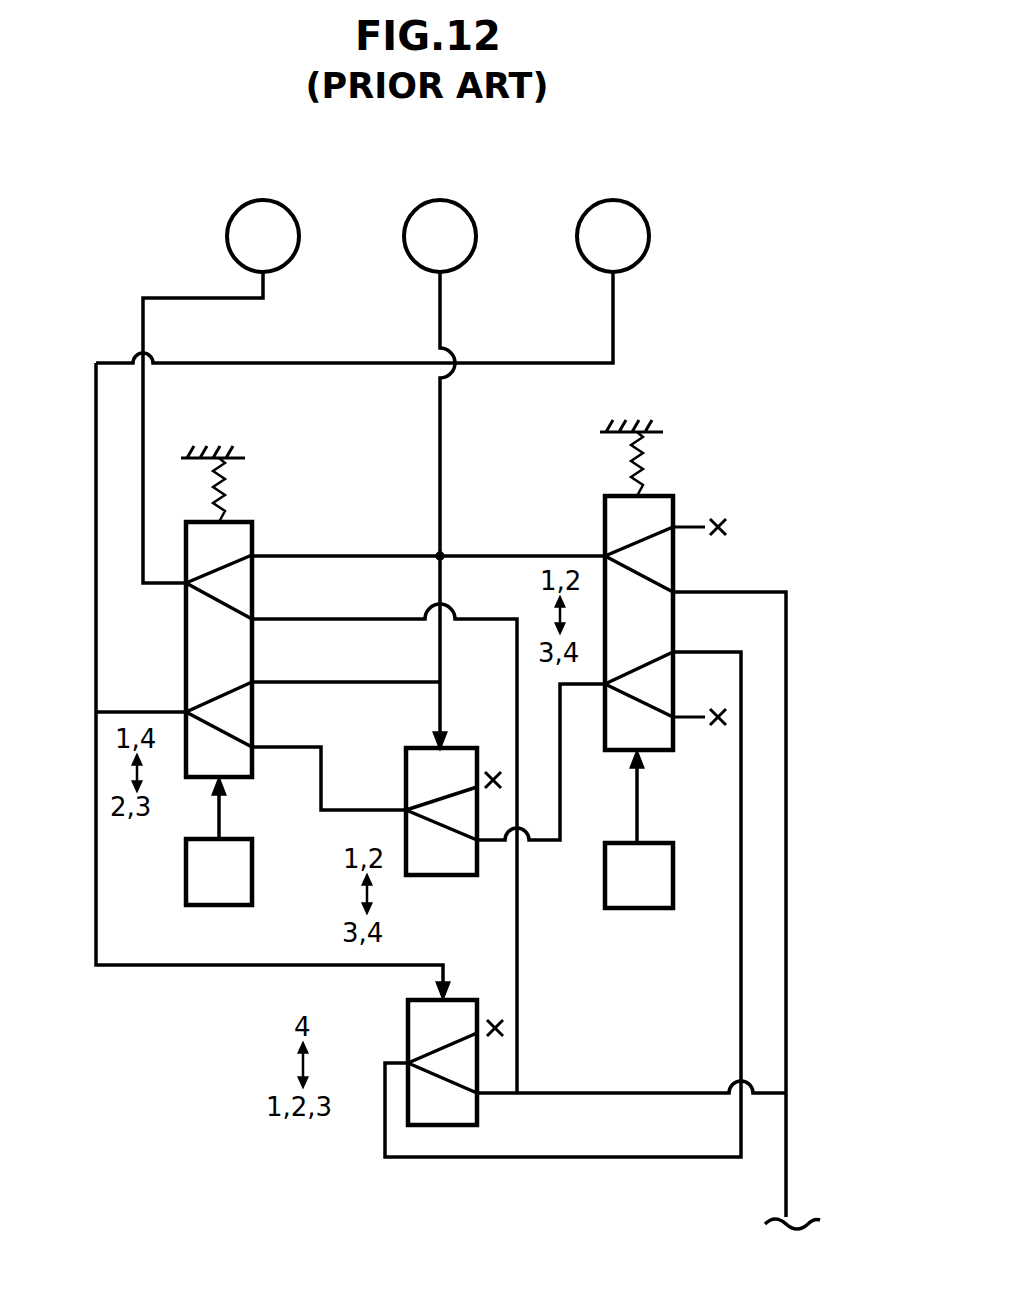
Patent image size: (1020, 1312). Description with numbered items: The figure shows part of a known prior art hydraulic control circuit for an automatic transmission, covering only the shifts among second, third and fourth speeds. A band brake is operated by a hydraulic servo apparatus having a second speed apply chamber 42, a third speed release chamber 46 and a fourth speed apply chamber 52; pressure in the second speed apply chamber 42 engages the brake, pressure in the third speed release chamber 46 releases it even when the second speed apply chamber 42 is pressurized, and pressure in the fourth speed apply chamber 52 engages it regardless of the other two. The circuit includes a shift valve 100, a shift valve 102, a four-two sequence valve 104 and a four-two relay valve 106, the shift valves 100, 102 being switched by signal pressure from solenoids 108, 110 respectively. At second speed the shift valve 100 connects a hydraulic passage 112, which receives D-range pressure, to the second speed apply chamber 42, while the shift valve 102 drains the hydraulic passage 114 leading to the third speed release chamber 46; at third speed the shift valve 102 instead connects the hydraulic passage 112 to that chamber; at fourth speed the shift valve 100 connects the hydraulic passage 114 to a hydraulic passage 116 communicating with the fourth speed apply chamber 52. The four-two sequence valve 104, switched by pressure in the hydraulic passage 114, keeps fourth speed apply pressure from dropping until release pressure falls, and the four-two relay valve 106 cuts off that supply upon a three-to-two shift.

The second speed apply chamber 42 is at (261, 200).
The third speed release chamber 46 is at (438, 200).
The fourth speed apply chamber 52 is at (611, 200).
The shift valve 100 is at (256, 518).
The shift valve 102 is at (672, 490).
The 4-2 sequence valve 104 is at (464, 740).
The 4-2 relay valve 106 is at (464, 992).
The solenoid 108 is at (253, 862).
The solenoid 110 is at (675, 868).
The hydraulic passage 112 is at (808, 1156).
The hydraulic passage 114 is at (521, 555).
The hydraulic passage 116 is at (98, 655).